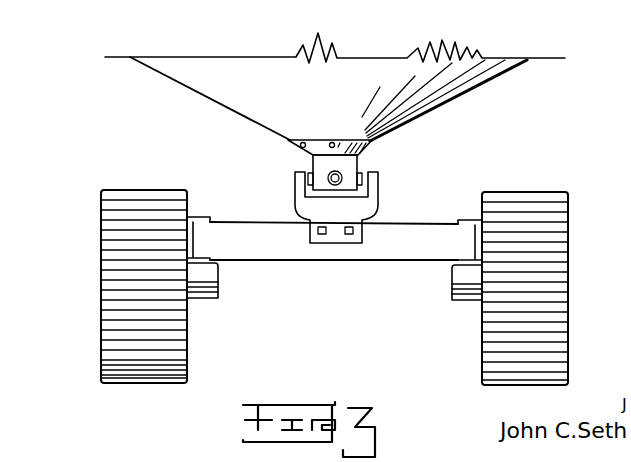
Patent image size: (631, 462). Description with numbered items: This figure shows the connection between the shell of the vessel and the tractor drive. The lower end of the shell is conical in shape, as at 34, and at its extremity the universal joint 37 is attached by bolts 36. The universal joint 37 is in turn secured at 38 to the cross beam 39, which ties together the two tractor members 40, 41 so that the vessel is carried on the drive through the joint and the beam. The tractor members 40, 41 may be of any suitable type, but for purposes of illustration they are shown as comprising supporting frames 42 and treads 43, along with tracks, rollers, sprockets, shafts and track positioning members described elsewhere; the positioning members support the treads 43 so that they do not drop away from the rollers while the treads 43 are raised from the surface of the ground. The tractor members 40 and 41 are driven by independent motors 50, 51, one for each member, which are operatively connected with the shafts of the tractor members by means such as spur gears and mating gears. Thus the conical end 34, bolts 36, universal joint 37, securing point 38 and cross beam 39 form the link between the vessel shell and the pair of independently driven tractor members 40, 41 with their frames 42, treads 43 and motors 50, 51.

The conical lower end of shell 34 is at (248, 97).
The bolts 36 is at (332, 142).
The universal joint 37 is at (341, 176).
The securing point of joint to cross beam 38 is at (322, 234).
The cross beam 39 is at (400, 253).
The tractor member 40 is at (102, 333).
The tractor member 41 is at (553, 317).
The supporting frames 42 is at (195, 233).
The treads 43 is at (175, 364).
The motor 50 is at (206, 282).
The motor 51 is at (456, 282).